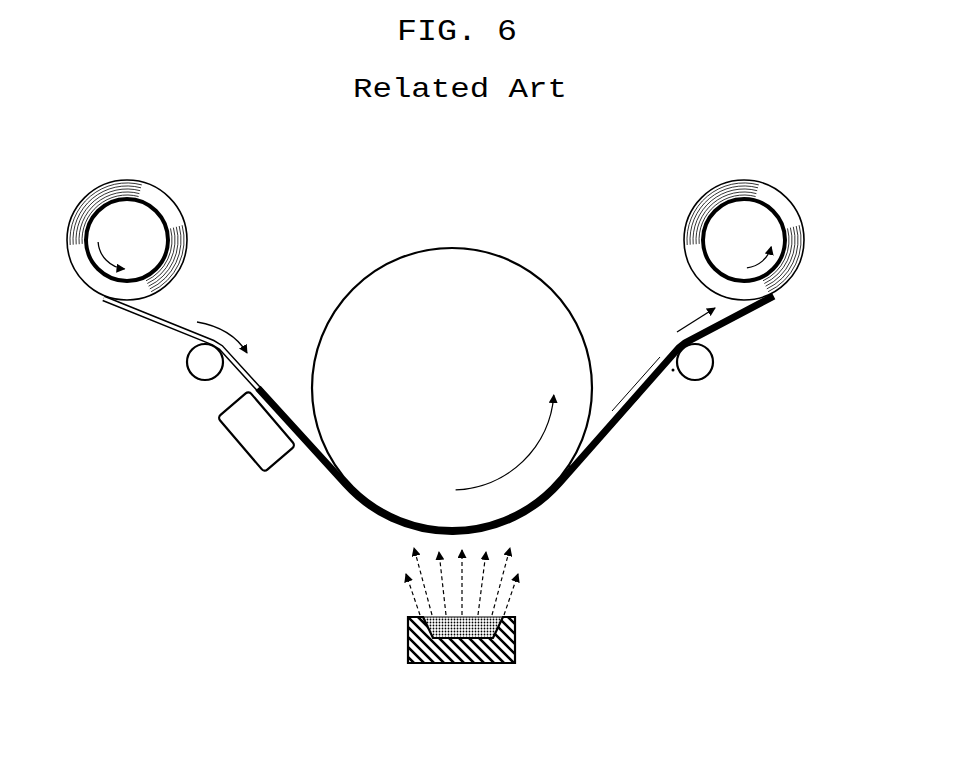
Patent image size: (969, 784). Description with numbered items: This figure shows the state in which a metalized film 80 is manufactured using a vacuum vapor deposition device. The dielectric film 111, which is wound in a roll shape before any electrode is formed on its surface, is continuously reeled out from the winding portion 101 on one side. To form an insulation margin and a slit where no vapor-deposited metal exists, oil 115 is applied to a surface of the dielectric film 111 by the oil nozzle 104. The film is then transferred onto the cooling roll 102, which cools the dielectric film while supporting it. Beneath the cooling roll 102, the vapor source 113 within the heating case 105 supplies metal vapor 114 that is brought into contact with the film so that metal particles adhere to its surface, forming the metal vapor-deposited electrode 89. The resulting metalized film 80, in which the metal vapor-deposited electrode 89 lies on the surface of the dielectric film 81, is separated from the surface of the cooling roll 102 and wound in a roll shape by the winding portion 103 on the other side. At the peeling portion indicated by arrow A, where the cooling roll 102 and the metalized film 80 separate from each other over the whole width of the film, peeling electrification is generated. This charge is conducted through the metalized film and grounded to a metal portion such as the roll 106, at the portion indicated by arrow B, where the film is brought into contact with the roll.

The winding portion 101 is at (160, 210).
The cooling roll 102 is at (367, 340).
The winding portion 103 is at (703, 212).
The dielectric film 111 is at (167, 322).
The roll 106 is at (700, 368).
The oil nozzle 104 is at (250, 443).
The oil 115 is at (319, 456).
The heating case 105 is at (410, 665).
The vapor source 113 is at (423, 633).
The metal vapor 114 is at (532, 540).
The metalized film 80 is at (715, 447).
The dielectric film 81 is at (620, 423).
The metal vapor-deposited electrode 89 is at (598, 452).
The peeling portion A is at (570, 467).
The grounding portion at roll B is at (673, 374).